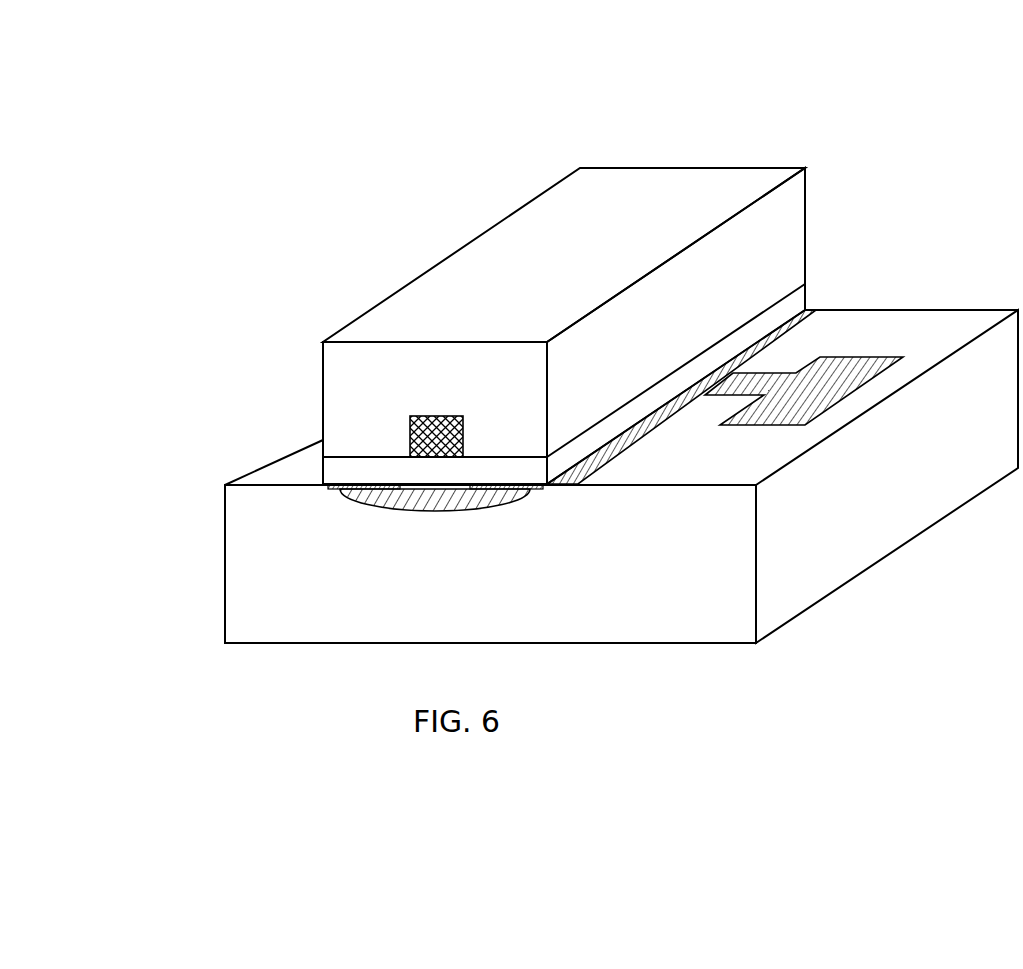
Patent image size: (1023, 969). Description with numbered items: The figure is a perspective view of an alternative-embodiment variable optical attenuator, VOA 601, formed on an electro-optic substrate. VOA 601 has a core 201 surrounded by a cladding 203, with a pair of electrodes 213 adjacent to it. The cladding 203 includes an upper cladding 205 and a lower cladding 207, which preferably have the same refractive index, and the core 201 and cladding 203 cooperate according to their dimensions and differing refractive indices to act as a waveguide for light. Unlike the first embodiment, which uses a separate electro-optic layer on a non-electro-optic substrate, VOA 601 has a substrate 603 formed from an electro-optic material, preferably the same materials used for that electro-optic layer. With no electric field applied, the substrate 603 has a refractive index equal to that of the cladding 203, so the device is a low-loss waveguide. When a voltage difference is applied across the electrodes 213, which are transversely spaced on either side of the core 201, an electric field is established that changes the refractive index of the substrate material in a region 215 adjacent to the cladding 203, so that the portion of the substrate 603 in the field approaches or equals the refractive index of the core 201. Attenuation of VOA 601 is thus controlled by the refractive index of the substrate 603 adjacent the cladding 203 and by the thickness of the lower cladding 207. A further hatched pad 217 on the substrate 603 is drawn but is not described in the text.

The VOA 601 is at (426, 68).
The cladding 203 is at (272, 170).
The upper cladding 205 is at (530, 255).
The lower cladding 207 is at (362, 457).
The core 201 is at (425, 417).
The electrodes 213 is at (808, 313).
The contact pad 217 is at (853, 355).
The region 215 is at (345, 500).
The substrate 603 is at (225, 566).